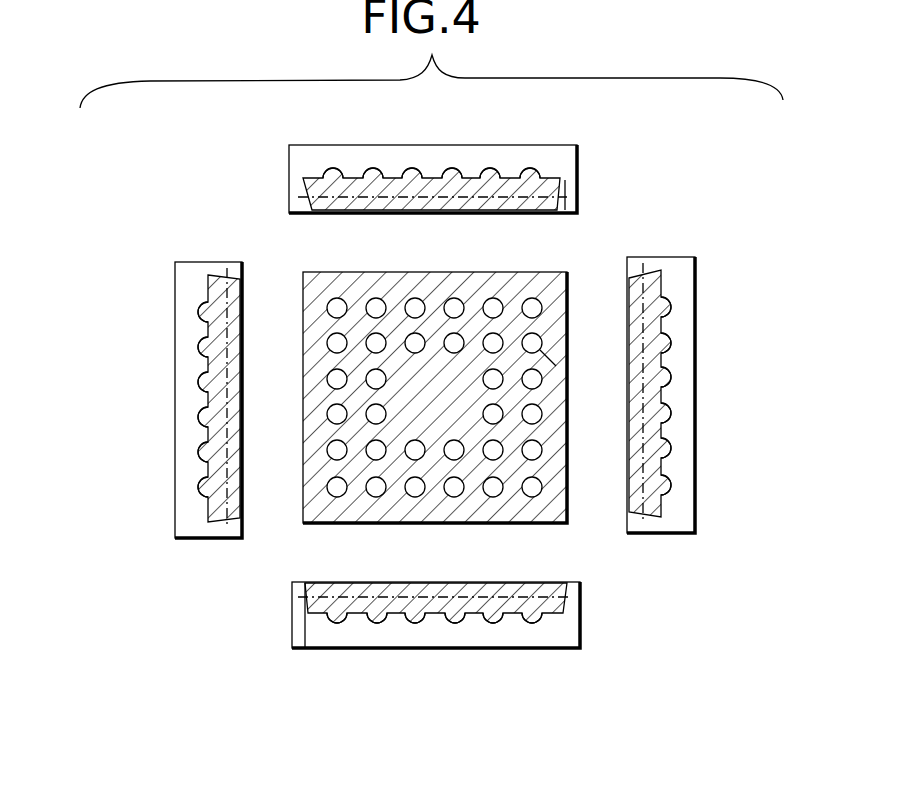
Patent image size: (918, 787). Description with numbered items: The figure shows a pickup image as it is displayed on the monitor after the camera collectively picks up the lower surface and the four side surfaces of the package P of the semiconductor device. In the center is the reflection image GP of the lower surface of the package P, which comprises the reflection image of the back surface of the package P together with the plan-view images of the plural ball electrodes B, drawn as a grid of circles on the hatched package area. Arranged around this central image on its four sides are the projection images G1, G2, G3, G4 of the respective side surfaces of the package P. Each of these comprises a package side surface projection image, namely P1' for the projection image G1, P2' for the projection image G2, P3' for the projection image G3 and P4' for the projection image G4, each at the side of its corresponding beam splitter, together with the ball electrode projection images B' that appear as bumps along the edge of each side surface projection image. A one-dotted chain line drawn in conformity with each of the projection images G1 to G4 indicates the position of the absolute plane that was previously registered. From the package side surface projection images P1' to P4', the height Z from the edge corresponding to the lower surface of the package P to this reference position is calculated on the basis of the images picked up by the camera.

The reflection image of the lower surface of the package GP is at (550, 272).
The package P is at (553, 358).
The ball electrodes B is at (434, 360).
The ball electrode projection images B' is at (437, 394).
The height to the reference position Z is at (433, 240).
The projection image G1 is at (657, 534).
The projection image G2 is at (225, 540).
The projection image G3 is at (578, 186).
The projection image G4 is at (568, 607).
The package side surface projection image P1' is at (651, 362).
The package side surface projection image P2' is at (219, 364).
The package side surface projection image P3' is at (391, 180).
The package side surface projection image P4' is at (397, 604).